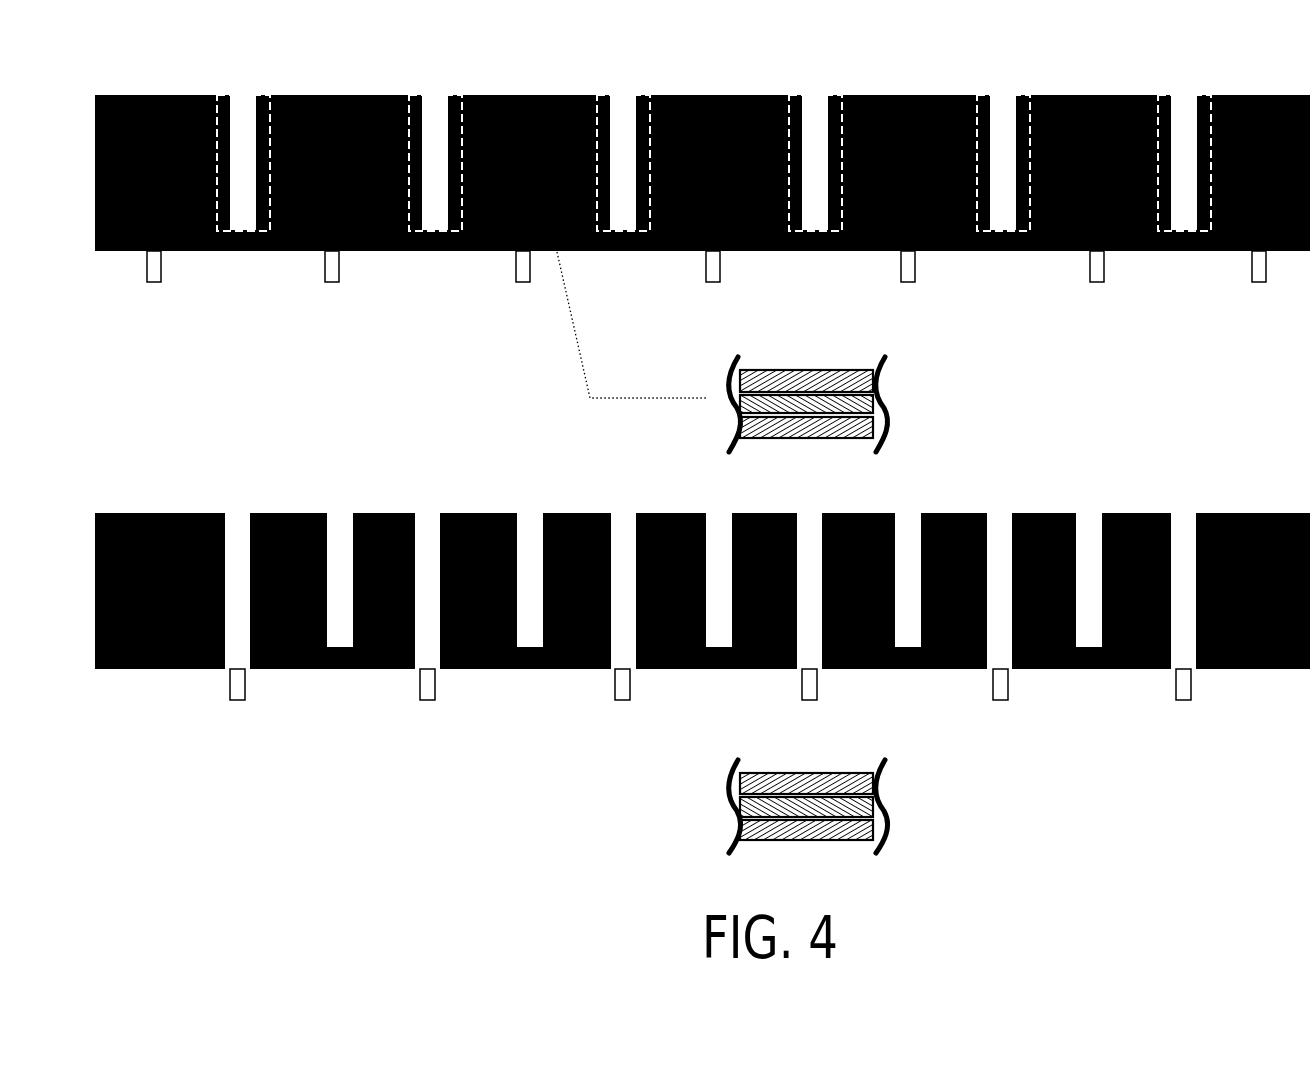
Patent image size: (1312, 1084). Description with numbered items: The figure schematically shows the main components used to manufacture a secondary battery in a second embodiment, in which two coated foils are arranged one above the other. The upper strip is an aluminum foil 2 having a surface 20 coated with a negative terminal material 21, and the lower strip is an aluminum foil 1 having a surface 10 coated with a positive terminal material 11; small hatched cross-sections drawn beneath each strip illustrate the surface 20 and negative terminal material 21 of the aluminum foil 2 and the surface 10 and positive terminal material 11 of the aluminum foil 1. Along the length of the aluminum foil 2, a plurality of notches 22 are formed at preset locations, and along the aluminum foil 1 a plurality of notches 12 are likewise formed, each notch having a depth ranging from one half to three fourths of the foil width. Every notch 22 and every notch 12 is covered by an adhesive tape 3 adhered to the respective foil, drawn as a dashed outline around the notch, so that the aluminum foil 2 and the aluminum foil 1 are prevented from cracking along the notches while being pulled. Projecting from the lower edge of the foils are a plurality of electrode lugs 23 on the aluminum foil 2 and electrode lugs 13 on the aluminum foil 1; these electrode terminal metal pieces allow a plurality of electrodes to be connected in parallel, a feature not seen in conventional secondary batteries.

The aluminum foil 1 is at (1245, 513).
The surface 10 is at (842, 797).
The positive terminal material 11 is at (818, 780).
The notches 12 is at (1102, 535).
The electrode lugs 13 is at (1002, 682).
The aluminum foil 2 is at (1183, 240).
The surface 20 is at (818, 380).
The negative terminal material 21 is at (817, 433).
The notches 22 is at (828, 112).
The electrode lugs 23 is at (1101, 258).
The adhesive tape 3 is at (1183, 113).